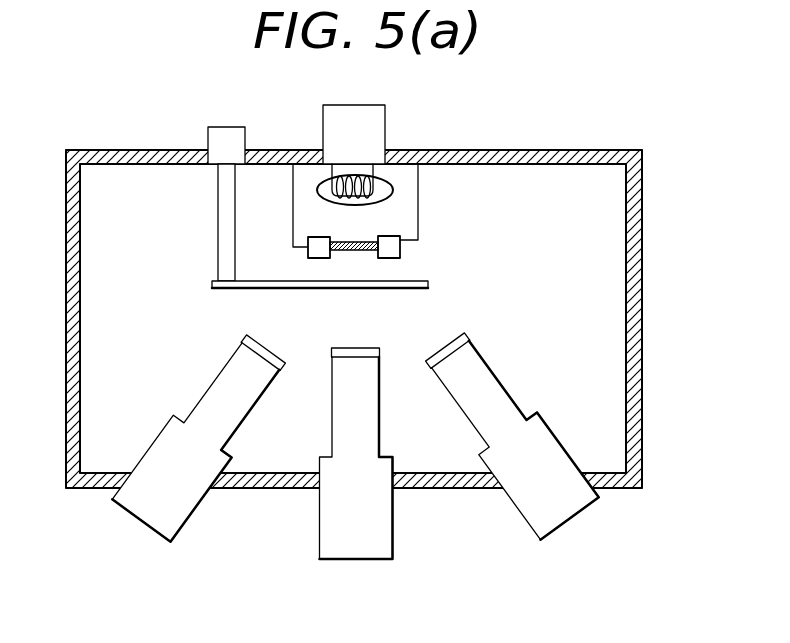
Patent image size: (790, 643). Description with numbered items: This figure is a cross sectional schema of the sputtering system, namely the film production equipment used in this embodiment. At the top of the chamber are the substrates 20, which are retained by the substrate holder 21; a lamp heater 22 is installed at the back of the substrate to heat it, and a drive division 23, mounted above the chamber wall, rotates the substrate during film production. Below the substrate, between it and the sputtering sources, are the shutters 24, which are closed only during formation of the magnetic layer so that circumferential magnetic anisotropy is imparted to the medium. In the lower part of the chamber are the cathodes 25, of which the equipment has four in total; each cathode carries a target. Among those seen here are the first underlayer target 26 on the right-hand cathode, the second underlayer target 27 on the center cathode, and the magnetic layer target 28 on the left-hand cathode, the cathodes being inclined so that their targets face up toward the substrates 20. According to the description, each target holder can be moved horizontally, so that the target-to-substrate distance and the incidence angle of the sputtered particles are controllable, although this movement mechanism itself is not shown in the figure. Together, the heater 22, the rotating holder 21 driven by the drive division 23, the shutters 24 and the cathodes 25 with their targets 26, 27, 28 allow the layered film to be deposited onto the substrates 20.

The substrates 20 is at (370, 253).
The substrate holder 21 is at (420, 240).
The lamp heater 22 is at (393, 188).
The drive division 23 is at (377, 122).
The shutters 24 is at (252, 291).
The cathodes 25 is at (355, 435).
The first underlayer target 26 is at (445, 343).
The second underlayer target 27 is at (357, 348).
The magnetic layer target 28 is at (260, 343).